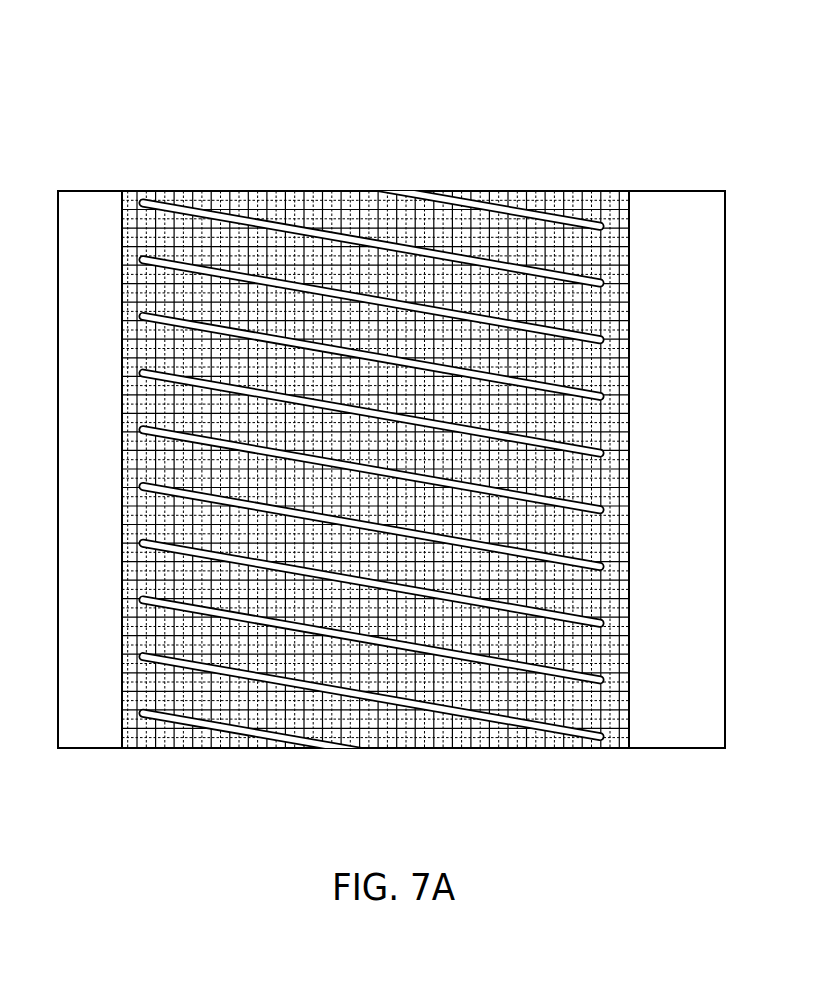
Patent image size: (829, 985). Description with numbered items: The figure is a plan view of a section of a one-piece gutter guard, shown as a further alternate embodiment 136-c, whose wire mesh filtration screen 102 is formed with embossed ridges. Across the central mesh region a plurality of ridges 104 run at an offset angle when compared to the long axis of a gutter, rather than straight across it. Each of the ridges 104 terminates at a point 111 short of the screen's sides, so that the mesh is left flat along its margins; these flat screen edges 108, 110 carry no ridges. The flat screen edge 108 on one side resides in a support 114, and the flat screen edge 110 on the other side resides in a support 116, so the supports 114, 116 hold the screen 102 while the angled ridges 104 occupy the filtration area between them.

The alternate embodiment of one-piece gutter guard 136-c is at (254, 46).
The flat screen edge 108 is at (71, 428).
The flat screen edge 110 is at (668, 427).
The wire mesh filtration screen 102 is at (430, 233).
The ridges 104 is at (475, 473).
The point 111 is at (371, 271).
The support 114 is at (107, 338).
The support 116 is at (697, 508).